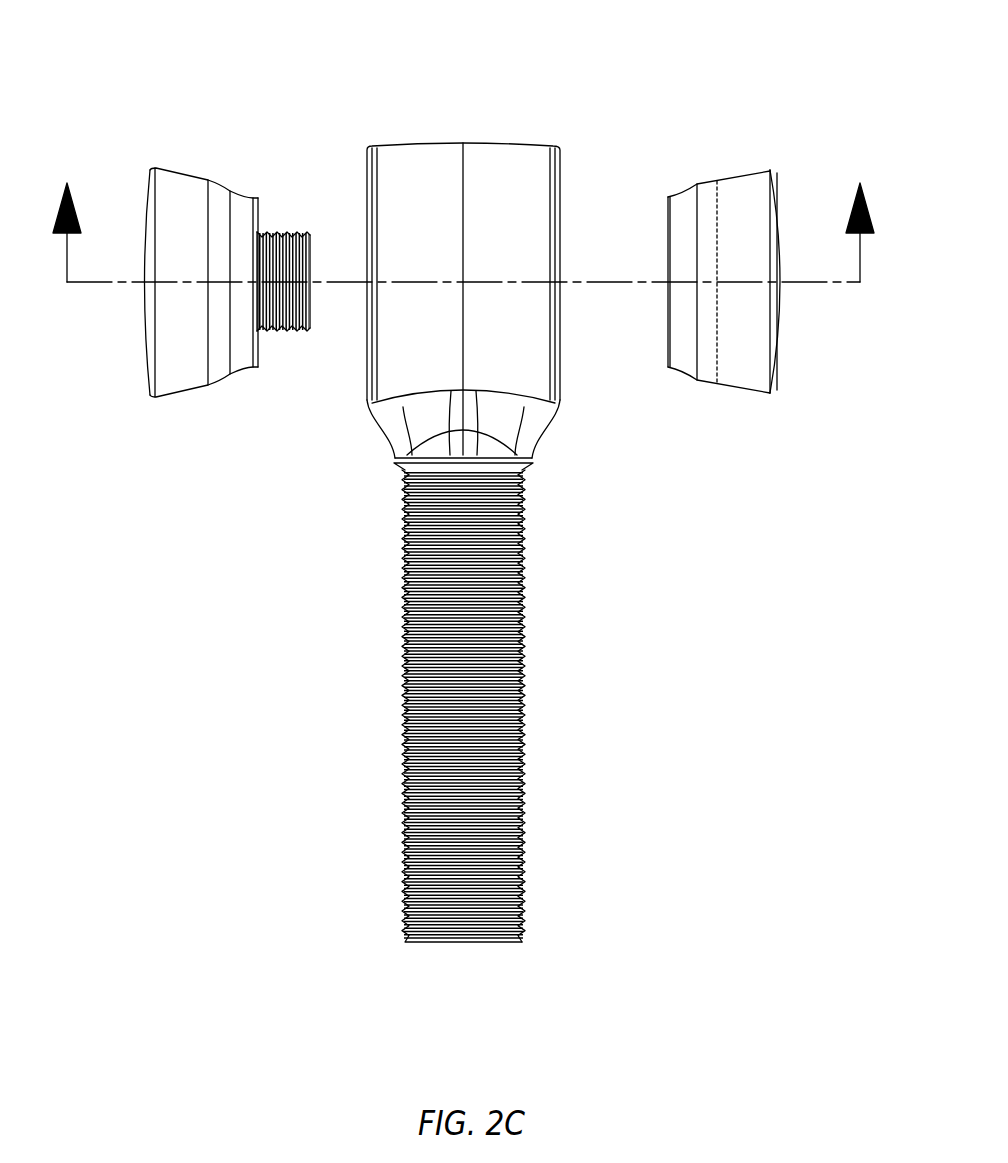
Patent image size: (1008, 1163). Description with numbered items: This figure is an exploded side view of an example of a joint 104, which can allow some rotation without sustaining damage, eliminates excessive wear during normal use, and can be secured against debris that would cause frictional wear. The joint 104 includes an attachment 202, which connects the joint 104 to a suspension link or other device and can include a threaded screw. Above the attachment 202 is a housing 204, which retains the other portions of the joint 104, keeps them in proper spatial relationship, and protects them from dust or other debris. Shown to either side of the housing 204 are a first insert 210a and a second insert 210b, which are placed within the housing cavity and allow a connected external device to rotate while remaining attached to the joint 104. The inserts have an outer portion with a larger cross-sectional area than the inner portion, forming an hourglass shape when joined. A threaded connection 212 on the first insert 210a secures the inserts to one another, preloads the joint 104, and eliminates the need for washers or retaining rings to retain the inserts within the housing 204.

The joint 104 is at (140, 68).
The attachment 202 is at (523, 643).
The housing 204 is at (525, 180).
The first insert 210a is at (193, 195).
The second insert 210b is at (742, 217).
The threaded connection 212 is at (293, 233).